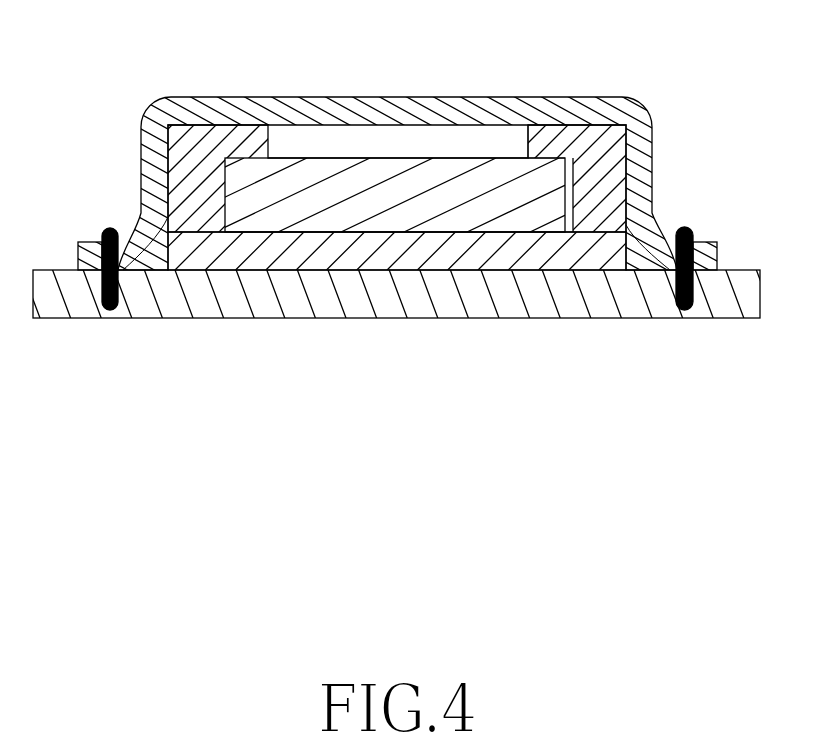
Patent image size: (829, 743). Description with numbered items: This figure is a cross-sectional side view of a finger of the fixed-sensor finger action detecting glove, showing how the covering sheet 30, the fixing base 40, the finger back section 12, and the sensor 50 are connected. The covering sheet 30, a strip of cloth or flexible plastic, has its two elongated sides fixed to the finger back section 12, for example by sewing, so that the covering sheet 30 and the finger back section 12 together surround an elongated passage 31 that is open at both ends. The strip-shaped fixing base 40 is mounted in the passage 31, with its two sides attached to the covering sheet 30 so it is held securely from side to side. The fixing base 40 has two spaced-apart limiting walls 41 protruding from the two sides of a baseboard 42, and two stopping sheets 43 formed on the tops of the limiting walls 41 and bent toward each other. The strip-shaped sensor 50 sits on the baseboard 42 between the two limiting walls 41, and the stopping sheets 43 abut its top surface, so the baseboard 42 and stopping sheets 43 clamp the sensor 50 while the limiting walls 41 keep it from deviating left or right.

The finger back section 12 is at (163, 305).
The covering sheet 30 is at (153, 168).
The passage 31 is at (157, 255).
The fixing base 40 is at (383, 213).
The limiting wall 41 is at (613, 190).
The baseboard 42 is at (350, 262).
The stopping sheet 43 is at (550, 138).
The sensor 50 is at (390, 167).